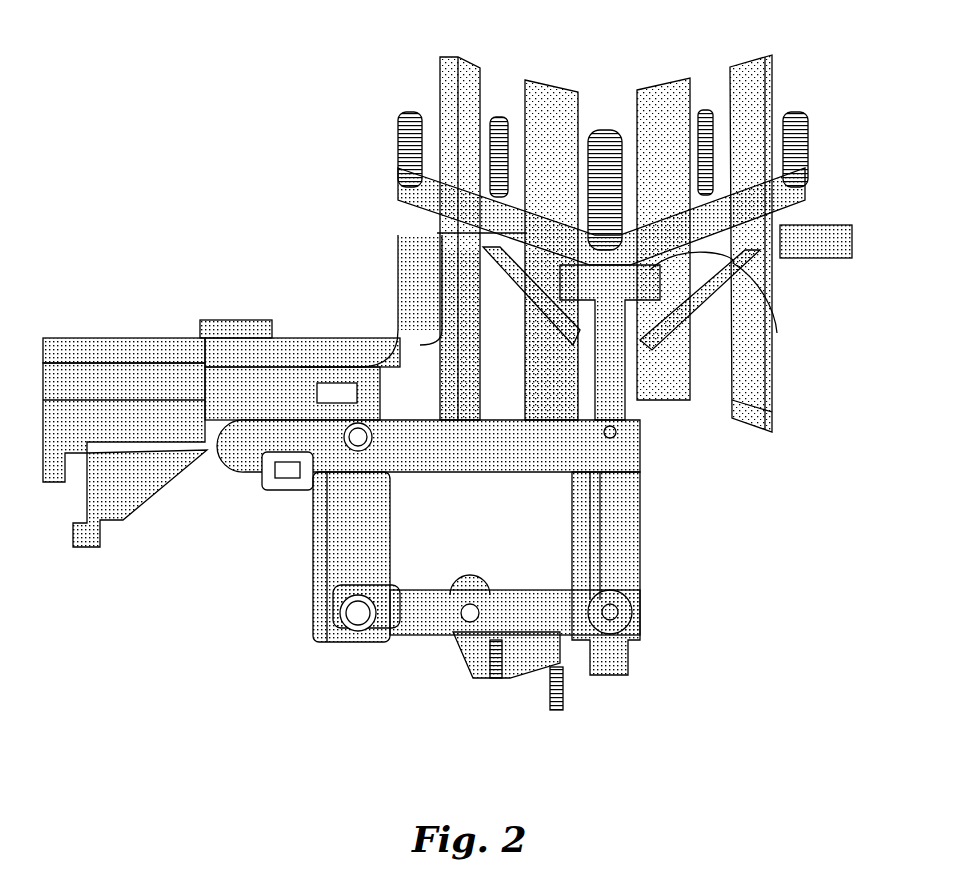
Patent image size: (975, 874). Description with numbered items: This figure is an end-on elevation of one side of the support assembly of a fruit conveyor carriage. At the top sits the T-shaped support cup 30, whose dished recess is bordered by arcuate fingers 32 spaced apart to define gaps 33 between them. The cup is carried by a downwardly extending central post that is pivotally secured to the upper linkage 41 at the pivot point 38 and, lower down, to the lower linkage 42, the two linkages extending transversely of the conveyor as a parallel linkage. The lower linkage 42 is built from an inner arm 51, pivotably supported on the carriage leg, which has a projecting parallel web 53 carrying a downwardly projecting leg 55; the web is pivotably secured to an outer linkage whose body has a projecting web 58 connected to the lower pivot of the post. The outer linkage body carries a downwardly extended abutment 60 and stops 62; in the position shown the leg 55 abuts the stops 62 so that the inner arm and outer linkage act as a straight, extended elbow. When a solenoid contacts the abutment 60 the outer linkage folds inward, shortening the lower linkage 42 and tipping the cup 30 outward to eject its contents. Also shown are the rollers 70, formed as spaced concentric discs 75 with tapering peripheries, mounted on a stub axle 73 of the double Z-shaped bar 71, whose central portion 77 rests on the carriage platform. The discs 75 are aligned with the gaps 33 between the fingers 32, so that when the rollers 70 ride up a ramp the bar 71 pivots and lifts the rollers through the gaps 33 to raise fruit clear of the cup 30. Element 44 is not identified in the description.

The T-shaped support cup 30 is at (777, 335).
The arcuate fingers 32 is at (398, 133).
The gaps 33 is at (628, 147).
The pivot point 38 is at (620, 432).
The upper linkage 41 is at (513, 460).
The lower linkage 42 is at (495, 570).
The vertical post 44 is at (640, 453).
The inner arm 51 is at (350, 603).
The projecting parallel web 53 is at (427, 595).
The downwardly projecting leg 55 is at (473, 677).
The projecting web 58 is at (628, 622).
The abutment 60 is at (563, 693).
The stops 62 is at (503, 677).
The rollers 70 is at (777, 380).
The double Z-shaped bar 71 is at (318, 348).
The stub axle 73 is at (828, 227).
The concentric discs 75 is at (468, 74).
The central portion 77 is at (113, 355).